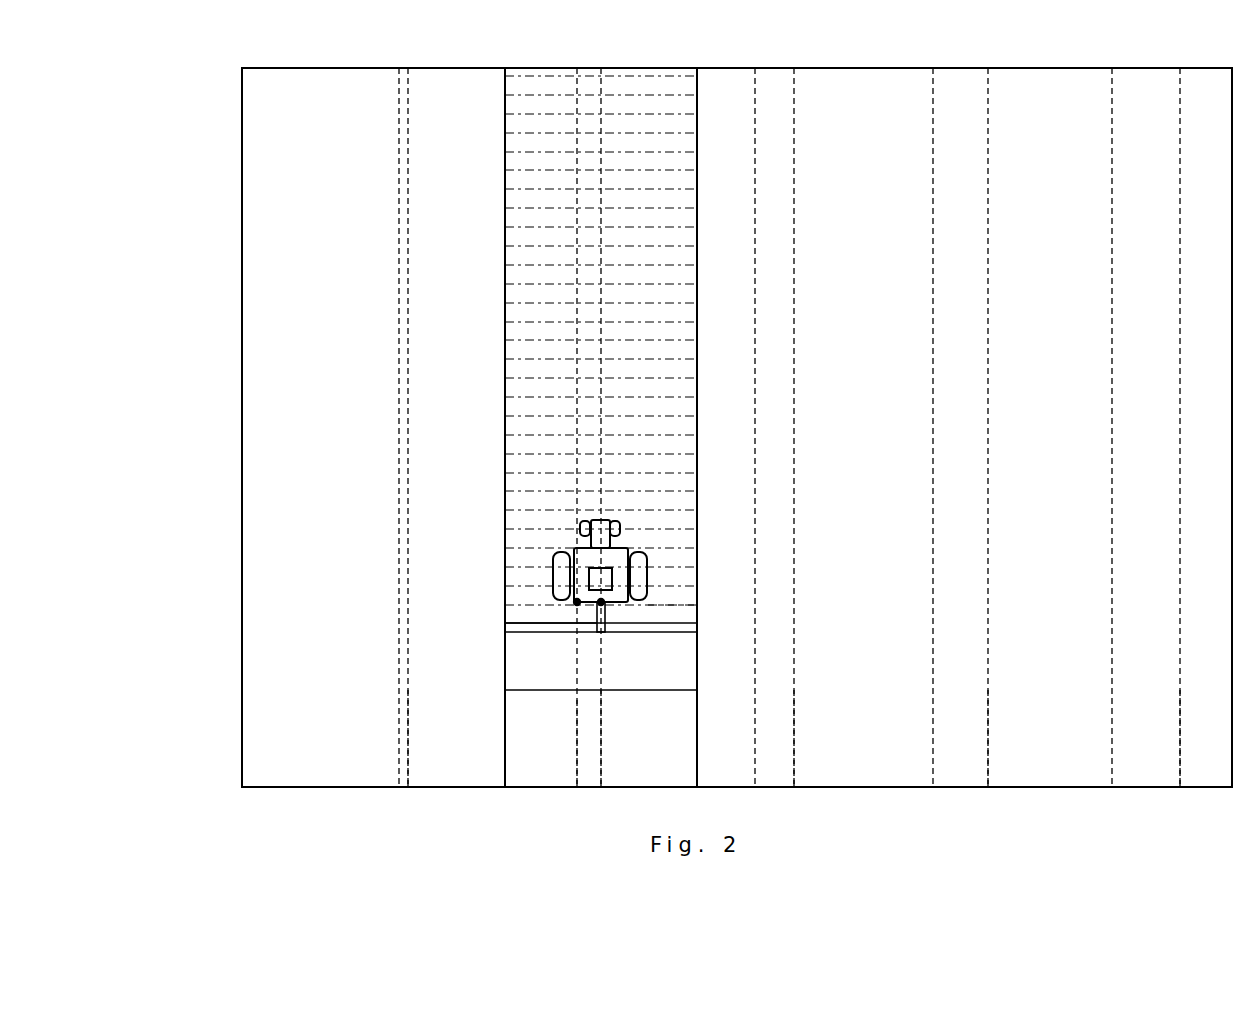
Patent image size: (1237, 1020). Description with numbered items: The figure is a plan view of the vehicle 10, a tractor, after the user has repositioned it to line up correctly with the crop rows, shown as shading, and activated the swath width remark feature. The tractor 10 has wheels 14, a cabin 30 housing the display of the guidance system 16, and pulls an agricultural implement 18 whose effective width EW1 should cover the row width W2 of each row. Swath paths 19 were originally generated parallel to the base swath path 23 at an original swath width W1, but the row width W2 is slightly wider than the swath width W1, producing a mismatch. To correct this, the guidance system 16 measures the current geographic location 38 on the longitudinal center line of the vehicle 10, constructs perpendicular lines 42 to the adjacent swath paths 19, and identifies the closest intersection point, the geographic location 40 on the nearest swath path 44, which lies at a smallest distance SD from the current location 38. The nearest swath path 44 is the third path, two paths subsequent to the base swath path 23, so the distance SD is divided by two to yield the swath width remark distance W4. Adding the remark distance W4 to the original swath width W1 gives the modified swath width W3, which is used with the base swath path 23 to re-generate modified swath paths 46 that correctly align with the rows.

The vehicle 10 is at (604, 533).
The wheels 14 is at (558, 557).
The guidance system 16 is at (613, 556).
The agricultural implement 18 is at (642, 690).
The swath path 19 is at (399, 446).
The base swath path 23 is at (242, 333).
The cabin 30 is at (590, 518).
The current geographic location 38 is at (606, 605).
The geographic location of nearest swath path 40 is at (575, 606).
The perpendicular lines 42 is at (665, 600).
The nearest swath path 44 is at (577, 732).
The modified swath paths 46 is at (408, 742).
The smallest distance SD is at (505, 623).
The swath width W1 is at (576, 364).
The row width W2 is at (696, 418).
The modified swath width W3 is at (602, 315).
The swath width remark distance W4 is at (452, 698).
The effective width EW1 is at (696, 661).